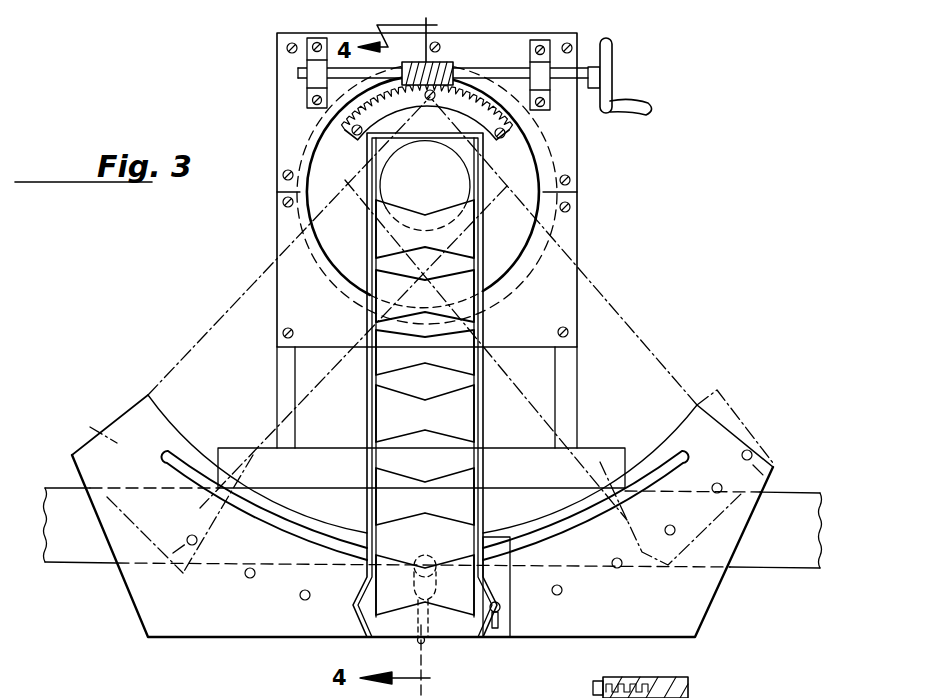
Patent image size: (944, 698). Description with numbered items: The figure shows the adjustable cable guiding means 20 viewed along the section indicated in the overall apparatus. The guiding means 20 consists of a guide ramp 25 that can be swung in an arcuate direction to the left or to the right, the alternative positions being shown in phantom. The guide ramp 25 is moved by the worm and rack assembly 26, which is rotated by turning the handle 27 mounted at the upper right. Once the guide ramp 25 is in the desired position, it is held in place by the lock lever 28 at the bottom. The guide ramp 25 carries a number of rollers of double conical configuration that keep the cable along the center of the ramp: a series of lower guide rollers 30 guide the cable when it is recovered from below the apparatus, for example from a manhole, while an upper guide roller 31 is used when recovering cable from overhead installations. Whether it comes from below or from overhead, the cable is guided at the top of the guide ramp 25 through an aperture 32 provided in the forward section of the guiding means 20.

The guiding means 20 is at (584, 224).
The guide ramp 25 is at (483, 312).
The worm and rack assembly 26 is at (457, 67).
The handle 27 is at (640, 100).
The lock lever 28 is at (430, 643).
The lower guide rollers 30 is at (400, 297).
The upper guide roller 31 is at (405, 222).
The aperture 32 is at (458, 182).